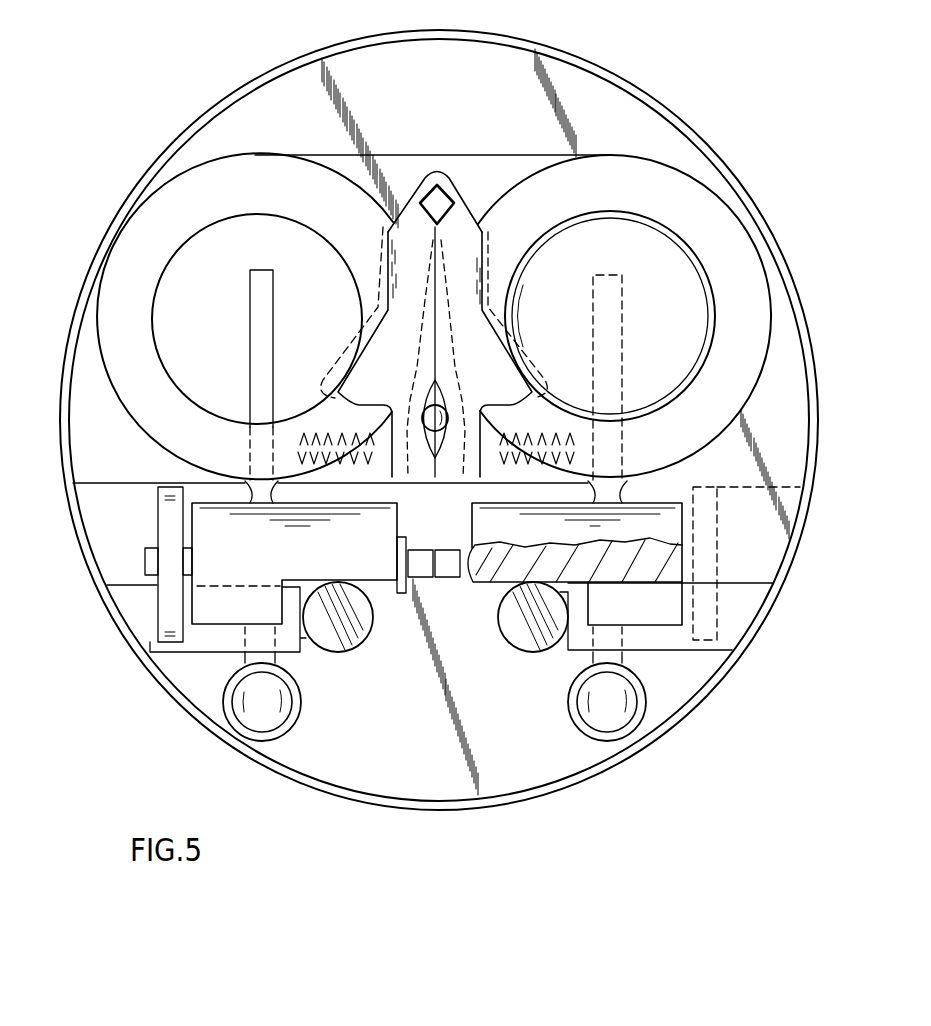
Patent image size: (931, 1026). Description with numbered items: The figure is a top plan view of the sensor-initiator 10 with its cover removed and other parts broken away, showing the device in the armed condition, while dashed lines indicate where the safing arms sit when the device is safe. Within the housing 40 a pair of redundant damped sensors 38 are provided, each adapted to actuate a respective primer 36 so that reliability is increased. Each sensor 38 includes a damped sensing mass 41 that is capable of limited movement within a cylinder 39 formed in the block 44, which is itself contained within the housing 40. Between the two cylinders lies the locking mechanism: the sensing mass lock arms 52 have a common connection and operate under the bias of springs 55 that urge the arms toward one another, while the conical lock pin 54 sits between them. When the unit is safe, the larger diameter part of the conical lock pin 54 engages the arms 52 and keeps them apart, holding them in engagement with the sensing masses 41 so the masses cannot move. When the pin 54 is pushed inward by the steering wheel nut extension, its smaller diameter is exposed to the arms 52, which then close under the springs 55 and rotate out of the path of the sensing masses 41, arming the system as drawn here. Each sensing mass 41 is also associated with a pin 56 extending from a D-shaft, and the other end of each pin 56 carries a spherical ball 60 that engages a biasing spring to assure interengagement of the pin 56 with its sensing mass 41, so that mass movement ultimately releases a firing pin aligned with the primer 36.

The sensor-initiator 10 is at (360, 818).
The primer 36 is at (525, 618).
The damped sensor 38 is at (206, 160).
The cylinder 39 is at (275, 218).
The housing 40 is at (262, 74).
The sensing mass 41 is at (660, 322).
The block 44 is at (90, 413).
The sensing mass lock arm 52 is at (466, 226).
The conical lock pin 54 is at (501, 367).
The spring 55 is at (520, 470).
The pin 56 is at (272, 296).
The spherical ball 60 is at (290, 704).